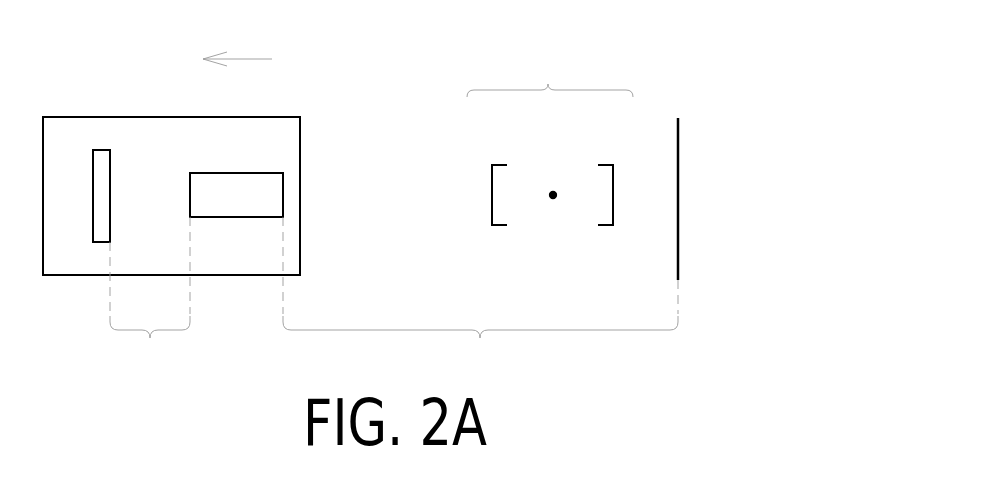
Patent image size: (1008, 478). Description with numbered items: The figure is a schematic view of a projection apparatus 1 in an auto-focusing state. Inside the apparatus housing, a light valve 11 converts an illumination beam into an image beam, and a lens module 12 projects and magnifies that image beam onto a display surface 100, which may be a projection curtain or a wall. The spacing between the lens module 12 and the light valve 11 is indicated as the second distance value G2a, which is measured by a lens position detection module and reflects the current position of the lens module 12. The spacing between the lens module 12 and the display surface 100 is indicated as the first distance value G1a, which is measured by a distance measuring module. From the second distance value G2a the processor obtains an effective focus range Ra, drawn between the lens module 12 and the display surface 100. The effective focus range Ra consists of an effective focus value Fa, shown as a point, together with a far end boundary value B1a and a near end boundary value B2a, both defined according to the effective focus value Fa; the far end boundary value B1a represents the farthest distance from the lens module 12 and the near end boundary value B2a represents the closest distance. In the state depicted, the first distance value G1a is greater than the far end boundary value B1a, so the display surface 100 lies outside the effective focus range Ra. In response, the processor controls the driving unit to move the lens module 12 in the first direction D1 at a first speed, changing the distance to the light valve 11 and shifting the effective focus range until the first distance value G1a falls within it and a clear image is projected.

The projection apparatus 1 is at (66, 123).
The light valve 11 is at (101, 157).
The lens module 12 is at (236, 190).
The first direction D1 is at (237, 45).
The display surface 100 is at (678, 135).
The effective focus range Ra is at (550, 76).
The near end boundary value B2a is at (488, 171).
The far end boundary value B1a is at (618, 171).
The effective focus value Fa is at (553, 190).
The second distance value G2a is at (150, 293).
The first distance value G1a is at (480, 293).